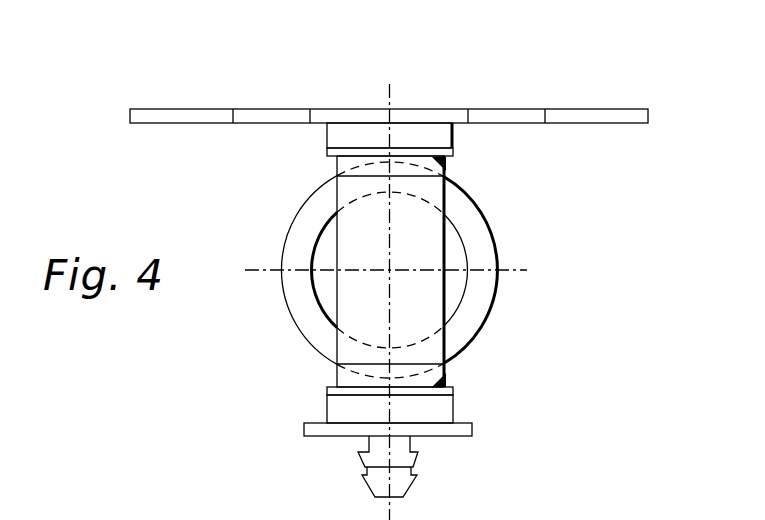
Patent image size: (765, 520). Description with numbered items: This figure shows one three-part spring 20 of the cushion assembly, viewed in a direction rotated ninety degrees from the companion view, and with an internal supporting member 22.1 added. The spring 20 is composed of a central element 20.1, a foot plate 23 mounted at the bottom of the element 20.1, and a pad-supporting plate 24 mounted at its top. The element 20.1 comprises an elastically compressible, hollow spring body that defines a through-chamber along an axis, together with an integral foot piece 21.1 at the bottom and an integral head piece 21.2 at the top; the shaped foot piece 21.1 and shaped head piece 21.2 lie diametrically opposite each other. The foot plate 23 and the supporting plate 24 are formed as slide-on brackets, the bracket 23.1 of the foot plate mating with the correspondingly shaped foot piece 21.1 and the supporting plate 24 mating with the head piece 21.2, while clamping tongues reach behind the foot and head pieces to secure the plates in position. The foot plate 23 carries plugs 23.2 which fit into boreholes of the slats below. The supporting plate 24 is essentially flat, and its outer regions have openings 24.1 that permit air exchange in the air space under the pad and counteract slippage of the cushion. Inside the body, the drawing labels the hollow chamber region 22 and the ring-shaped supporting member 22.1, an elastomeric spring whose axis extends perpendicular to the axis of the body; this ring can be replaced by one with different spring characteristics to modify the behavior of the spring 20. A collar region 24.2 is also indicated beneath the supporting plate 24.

The spring 20 is at (474, 82).
The element 20.1 is at (425, 238).
The foot piece 21.1 is at (440, 382).
The head piece 21.2 is at (448, 166).
The cylindrical body 22 is at (346, 247).
The internal supporting member 22.1 is at (300, 225).
The foot plate 23 is at (334, 442).
The slide-on bracket 23.1 is at (330, 406).
The plug 23.2 is at (414, 483).
The supporting plate 24 is at (344, 100).
The openings 24.1 is at (268, 108).
The upper collar 24.2 is at (327, 137).